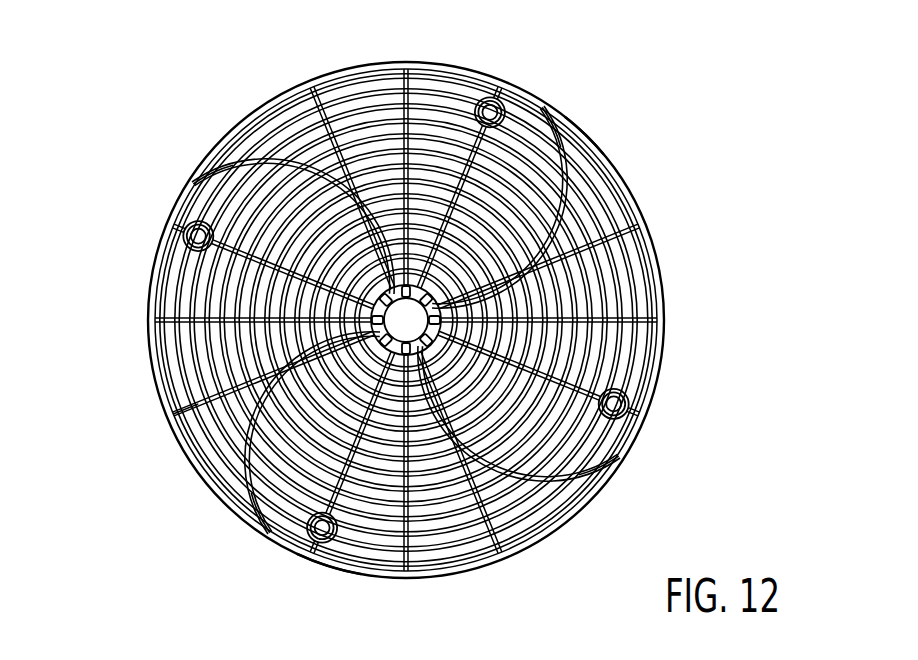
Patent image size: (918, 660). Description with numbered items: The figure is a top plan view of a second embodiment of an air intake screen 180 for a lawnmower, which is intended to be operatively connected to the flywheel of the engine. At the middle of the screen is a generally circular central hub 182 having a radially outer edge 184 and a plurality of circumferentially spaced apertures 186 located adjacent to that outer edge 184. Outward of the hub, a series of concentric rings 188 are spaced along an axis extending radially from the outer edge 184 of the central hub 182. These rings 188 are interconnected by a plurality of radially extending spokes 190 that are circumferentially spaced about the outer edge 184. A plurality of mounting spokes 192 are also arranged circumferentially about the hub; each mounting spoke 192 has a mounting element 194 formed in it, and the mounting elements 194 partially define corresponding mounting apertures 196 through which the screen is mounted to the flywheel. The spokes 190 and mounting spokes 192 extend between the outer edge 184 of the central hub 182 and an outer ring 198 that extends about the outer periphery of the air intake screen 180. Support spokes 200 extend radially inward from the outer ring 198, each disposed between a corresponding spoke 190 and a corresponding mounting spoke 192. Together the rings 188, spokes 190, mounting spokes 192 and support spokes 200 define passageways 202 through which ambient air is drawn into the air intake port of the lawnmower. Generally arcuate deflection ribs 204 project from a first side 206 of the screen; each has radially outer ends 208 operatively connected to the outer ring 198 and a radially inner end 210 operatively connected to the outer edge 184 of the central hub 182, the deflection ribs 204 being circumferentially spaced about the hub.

The air intake screen 180 is at (304, 572).
The central hub 182 is at (436, 105).
The radially outer edge 184 is at (185, 204).
The apertures 186 is at (163, 322).
The concentric rings 188 is at (337, 81).
The spokes 190 is at (177, 398).
The mounting spokes 192 is at (520, 125).
The mounting elements 194 is at (474, 99).
The mounting apertures 196 is at (489, 105).
The outer ring 198 is at (590, 131).
The support spokes 200 is at (372, 106).
The passageways 202 is at (278, 132).
The deflection ribs 204 is at (213, 168).
The first side 206 is at (183, 410).
The radially outer ends 208 is at (550, 104).
The radially inner end 210 is at (401, 100).